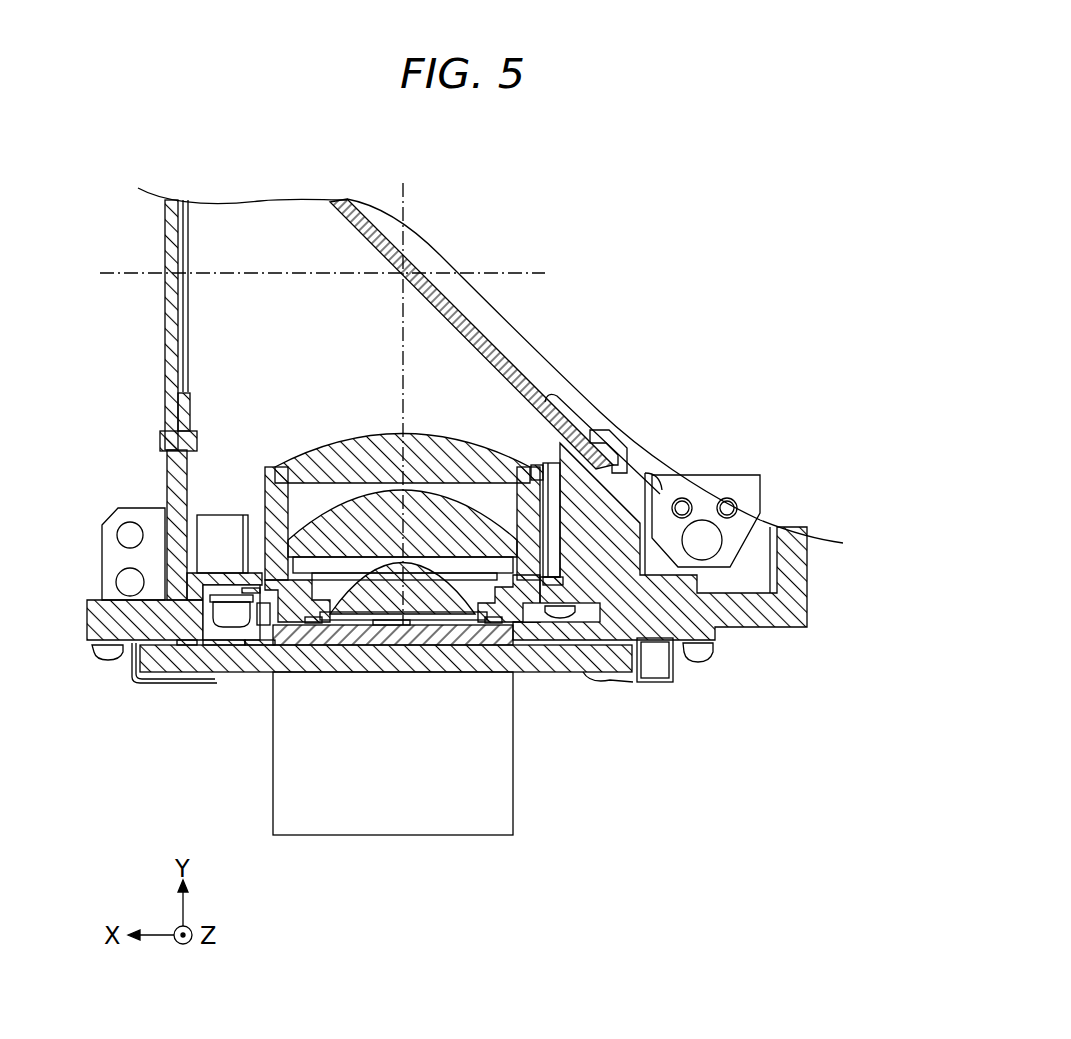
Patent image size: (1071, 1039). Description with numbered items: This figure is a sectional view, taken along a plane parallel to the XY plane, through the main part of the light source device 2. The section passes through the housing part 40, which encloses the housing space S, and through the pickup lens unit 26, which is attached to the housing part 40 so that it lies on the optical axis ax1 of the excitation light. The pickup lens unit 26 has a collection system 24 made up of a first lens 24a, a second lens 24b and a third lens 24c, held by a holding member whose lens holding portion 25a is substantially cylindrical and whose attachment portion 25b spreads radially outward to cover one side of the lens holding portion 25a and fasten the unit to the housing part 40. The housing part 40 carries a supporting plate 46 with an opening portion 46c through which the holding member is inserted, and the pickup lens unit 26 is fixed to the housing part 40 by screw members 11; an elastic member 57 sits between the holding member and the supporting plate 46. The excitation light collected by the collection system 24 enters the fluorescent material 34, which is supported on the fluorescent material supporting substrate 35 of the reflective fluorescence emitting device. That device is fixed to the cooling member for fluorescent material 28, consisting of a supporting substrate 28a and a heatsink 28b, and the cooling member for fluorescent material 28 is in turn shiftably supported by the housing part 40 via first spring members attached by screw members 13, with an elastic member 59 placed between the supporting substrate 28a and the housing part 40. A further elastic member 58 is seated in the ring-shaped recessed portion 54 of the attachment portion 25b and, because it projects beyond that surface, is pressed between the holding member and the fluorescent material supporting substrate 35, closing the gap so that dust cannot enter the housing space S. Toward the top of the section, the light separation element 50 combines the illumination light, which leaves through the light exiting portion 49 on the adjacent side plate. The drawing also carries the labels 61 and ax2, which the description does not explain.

The light source device 2 is at (699, 252).
The light separation element 50 is at (366, 222).
The light exiting portion 49 is at (172, 370).
The collection system 24 is at (380, 456).
The first lens 24a is at (310, 468).
The second lens 24b is at (335, 525).
The third lens 24c is at (373, 585).
The pickup lens unit 26 is at (539, 452).
The lens holding portion 25a is at (543, 515).
The attachment portion 25b is at (555, 625).
The housing part 40 is at (795, 607).
The supporting plate 46 is at (228, 597).
The opening portion 46c is at (270, 582).
The screw members 13 is at (110, 662).
The spring clip 61 is at (153, 690).
The elastic member 59 is at (197, 640).
The screw members 11 is at (224, 645).
The elastic member 57 is at (258, 648).
The ring-shaped recessed portion 54 is at (518, 620).
The fluorescent material 34 is at (412, 645).
The elastic member 58 is at (313, 645).
The cooling member for fluorescent material 28 is at (447, 713).
The supporting substrate 28a is at (588, 686).
The heatsink 28b is at (515, 800).
The fluorescent material supporting substrate 35 is at (300, 672).
The housing space S is at (264, 243).
The optical axis ax1 is at (403, 207).
The second axis ax2 is at (530, 273).